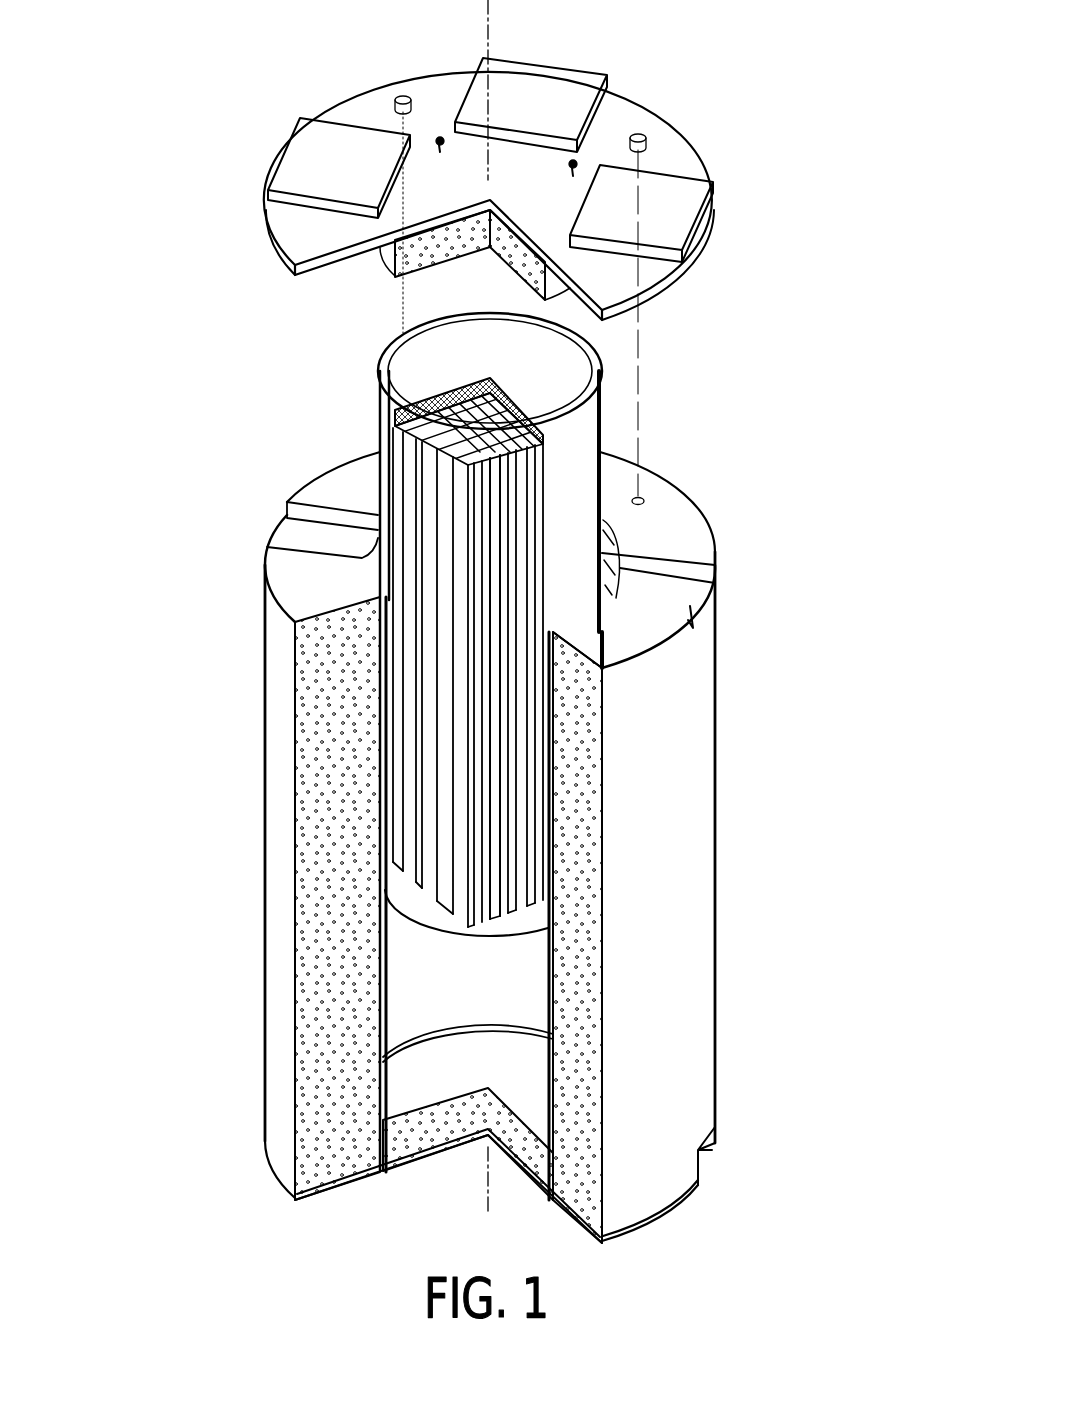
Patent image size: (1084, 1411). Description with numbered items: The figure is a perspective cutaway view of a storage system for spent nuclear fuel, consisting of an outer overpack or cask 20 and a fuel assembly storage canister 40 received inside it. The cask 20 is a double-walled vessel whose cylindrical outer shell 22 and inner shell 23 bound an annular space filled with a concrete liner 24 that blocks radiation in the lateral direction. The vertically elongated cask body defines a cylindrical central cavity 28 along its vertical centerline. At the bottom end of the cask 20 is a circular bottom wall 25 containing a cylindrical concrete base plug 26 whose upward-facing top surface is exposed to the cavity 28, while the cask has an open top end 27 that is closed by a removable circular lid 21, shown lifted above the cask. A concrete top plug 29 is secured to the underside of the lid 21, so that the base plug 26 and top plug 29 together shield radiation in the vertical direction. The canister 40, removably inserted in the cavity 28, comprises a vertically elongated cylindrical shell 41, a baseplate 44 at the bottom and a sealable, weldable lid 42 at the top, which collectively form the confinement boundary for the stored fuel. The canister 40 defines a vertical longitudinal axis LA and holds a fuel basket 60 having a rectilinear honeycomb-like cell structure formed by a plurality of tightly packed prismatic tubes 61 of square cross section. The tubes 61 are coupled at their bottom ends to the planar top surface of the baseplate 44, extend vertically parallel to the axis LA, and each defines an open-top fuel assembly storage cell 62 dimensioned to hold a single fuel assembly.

The cask 20 is at (498, 832).
The lid 21 is at (371, 94).
The outer shell 22 is at (278, 807).
The inner shell 23 is at (376, 920).
The concrete liner 24 is at (313, 736).
The bottom wall 25 is at (343, 1190).
The base plug 26 is at (437, 1128).
The top end 27 is at (332, 467).
The central cavity 28 is at (548, 980).
The top plug 29 is at (389, 248).
The fuel assembly storage canister 40 is at (481, 736).
The cylindrical shell 41 is at (602, 425).
The lid 42 is at (432, 367).
The baseplate 44 is at (414, 900).
The fuel basket 60 is at (501, 656).
The prismatic tubes 61 is at (493, 728).
The fuel assembly storage cells 62 is at (493, 450).
The longitudinal axis LA is at (490, 29).